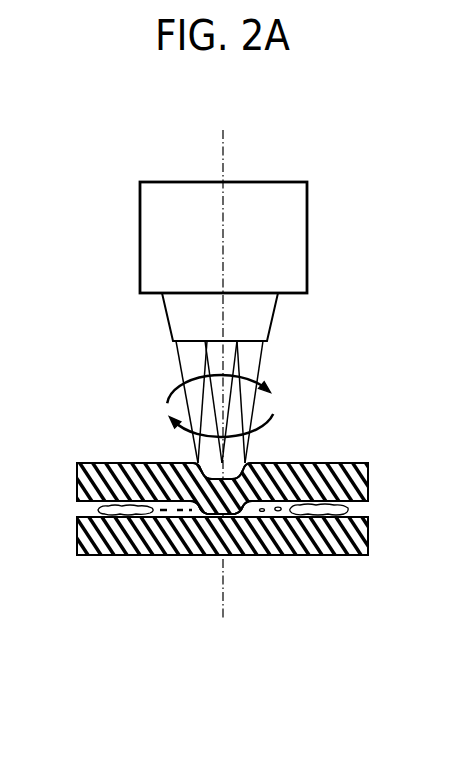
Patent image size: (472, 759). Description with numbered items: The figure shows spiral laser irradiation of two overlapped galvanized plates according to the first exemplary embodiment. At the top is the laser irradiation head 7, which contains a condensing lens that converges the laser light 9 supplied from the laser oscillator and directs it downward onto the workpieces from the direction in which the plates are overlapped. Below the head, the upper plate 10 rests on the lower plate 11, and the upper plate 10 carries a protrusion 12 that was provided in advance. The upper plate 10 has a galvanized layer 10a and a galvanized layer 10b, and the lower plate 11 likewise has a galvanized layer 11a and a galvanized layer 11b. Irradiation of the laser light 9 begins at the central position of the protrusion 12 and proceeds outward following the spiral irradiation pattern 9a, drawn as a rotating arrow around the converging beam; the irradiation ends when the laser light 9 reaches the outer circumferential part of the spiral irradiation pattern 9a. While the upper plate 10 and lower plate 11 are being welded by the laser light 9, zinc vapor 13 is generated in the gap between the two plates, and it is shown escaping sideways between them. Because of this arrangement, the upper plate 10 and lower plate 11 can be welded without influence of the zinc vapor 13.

The laser irradiation head 7 is at (168, 250).
The laser light 9 is at (197, 363).
The spiral irradiation pattern 9a is at (188, 430).
The upper plate 10 is at (284, 491).
The galvanized layer 10a is at (133, 463).
The galvanized layer 10b is at (83, 497).
The lower plate 11 is at (289, 539).
The galvanized layer 11a is at (95, 525).
The galvanized layer 11b is at (115, 554).
The protrusion 12 is at (213, 514).
The zinc vapor 13 is at (320, 508).